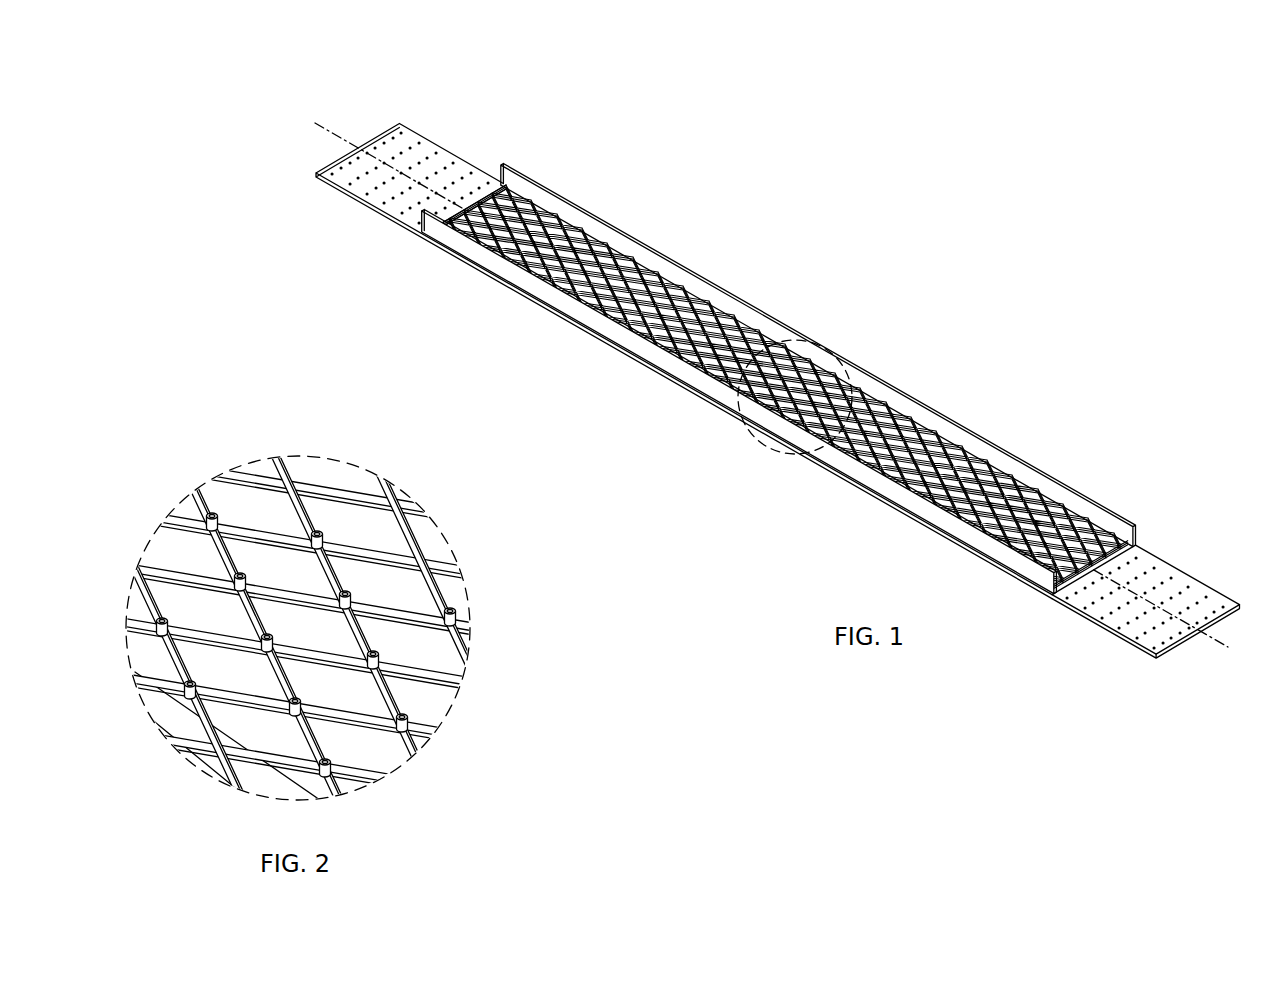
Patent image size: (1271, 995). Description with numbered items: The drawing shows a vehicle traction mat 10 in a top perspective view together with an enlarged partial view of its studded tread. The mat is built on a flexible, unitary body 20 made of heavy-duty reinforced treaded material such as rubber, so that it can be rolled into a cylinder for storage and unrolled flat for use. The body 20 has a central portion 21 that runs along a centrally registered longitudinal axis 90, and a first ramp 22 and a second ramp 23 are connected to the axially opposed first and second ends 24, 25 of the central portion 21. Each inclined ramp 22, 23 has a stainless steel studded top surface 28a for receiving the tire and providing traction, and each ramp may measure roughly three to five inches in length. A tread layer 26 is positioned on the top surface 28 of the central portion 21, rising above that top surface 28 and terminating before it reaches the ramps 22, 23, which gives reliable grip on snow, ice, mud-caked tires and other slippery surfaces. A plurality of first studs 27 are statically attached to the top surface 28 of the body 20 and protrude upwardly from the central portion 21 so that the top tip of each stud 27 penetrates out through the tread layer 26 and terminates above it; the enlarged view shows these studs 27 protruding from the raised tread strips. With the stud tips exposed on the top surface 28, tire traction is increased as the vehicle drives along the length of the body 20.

In FIG. 1, the vehicle traction mat 10 is at (653, 150).
In FIG. 1, the body 20 is at (884, 390).
In FIG. 2, the body 20 is at (305, 430).
In FIG. 1, the central portion 21 is at (672, 317).
In FIG. 2, the central portion 21 is at (267, 563).
In FIG. 1, the first ramp 22 is at (1152, 575).
In FIG. 1, the second ramp 23 is at (378, 162).
In FIG. 1, the first end 24 is at (1068, 593).
In FIG. 1, the second end 25 is at (469, 188).
In FIG. 2, the tread layer 26 is at (400, 697).
In FIG. 2, the first studs 27 is at (237, 580).
In FIG. 2, the top surface 28 is at (320, 640).
In FIG. 1, the studded top surface 28a is at (425, 198).
In FIG. 1, the longitudinal axis 90 is at (1207, 640).